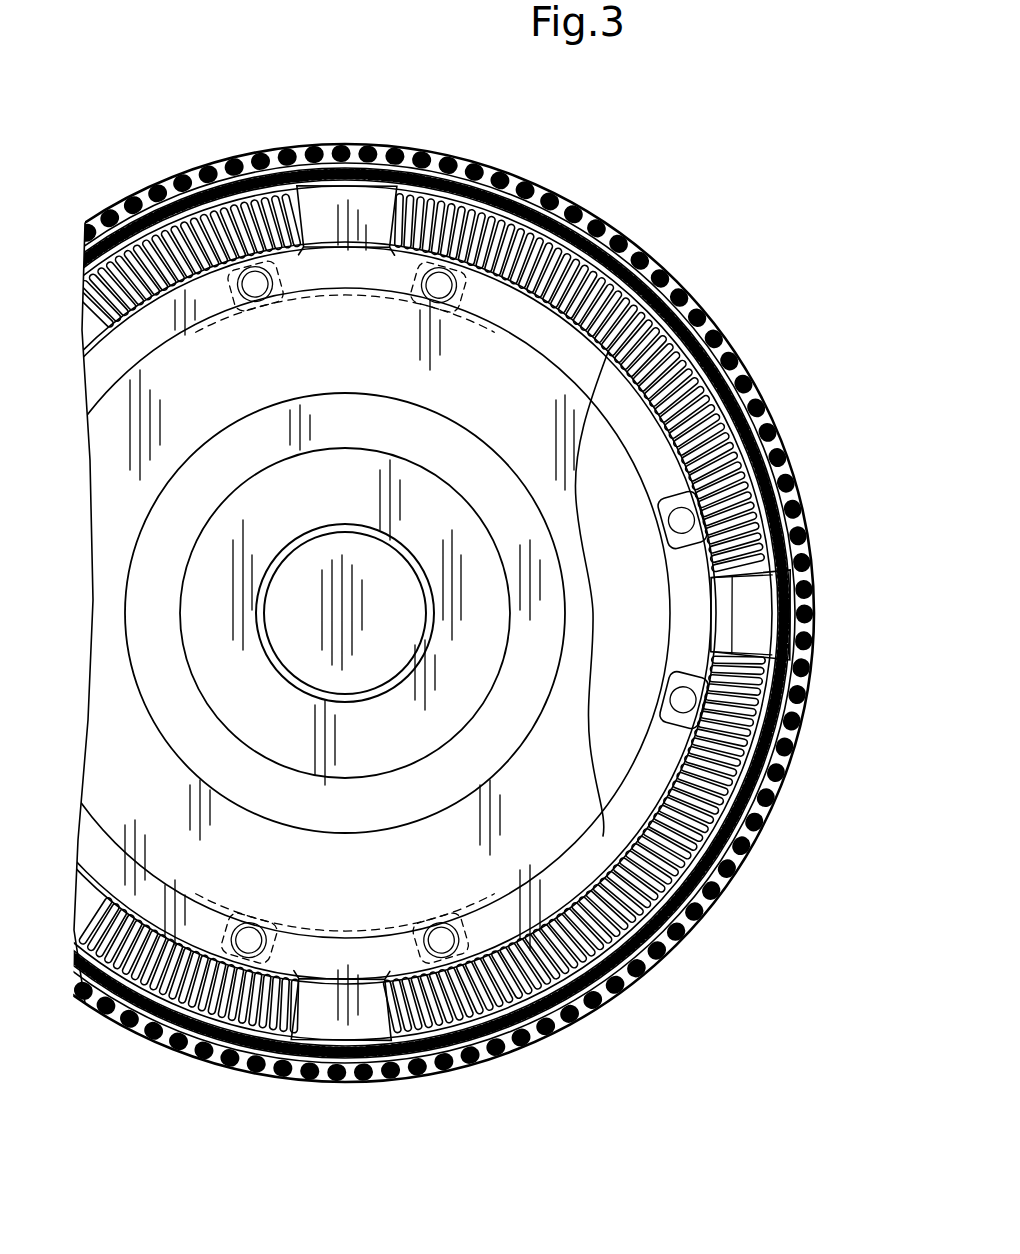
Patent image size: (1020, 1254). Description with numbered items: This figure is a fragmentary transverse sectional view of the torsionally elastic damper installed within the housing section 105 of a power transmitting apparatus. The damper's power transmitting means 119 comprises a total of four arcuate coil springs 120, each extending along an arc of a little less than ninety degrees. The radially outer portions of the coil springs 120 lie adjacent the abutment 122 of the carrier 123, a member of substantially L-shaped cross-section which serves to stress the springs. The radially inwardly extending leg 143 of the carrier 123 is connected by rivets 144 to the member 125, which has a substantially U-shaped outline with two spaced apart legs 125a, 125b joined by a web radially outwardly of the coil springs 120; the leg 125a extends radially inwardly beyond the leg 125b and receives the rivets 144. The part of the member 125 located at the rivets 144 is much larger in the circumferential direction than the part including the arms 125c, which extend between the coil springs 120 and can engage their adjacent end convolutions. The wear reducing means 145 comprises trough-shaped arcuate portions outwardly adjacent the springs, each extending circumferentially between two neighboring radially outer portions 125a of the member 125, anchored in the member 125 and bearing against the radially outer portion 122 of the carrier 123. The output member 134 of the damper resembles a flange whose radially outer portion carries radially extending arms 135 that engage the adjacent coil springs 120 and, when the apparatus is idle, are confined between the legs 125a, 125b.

The housing section 105 is at (207, 178).
The power transmitting means 119 is at (568, 210).
The coil springs 120 is at (293, 238).
The abutment 122 is at (125, 212).
The carrier 123 is at (407, 613).
The member 125 is at (455, 183).
The leg 125a is at (742, 593).
The leg 125b is at (741, 615).
The arms 125c is at (360, 190).
The output member 134 is at (500, 406).
The arms 135 is at (367, 208).
The radially inwardly extending leg 143 is at (722, 383).
The rivets 144 is at (773, 437).
The wear reducing means 145 is at (617, 257).